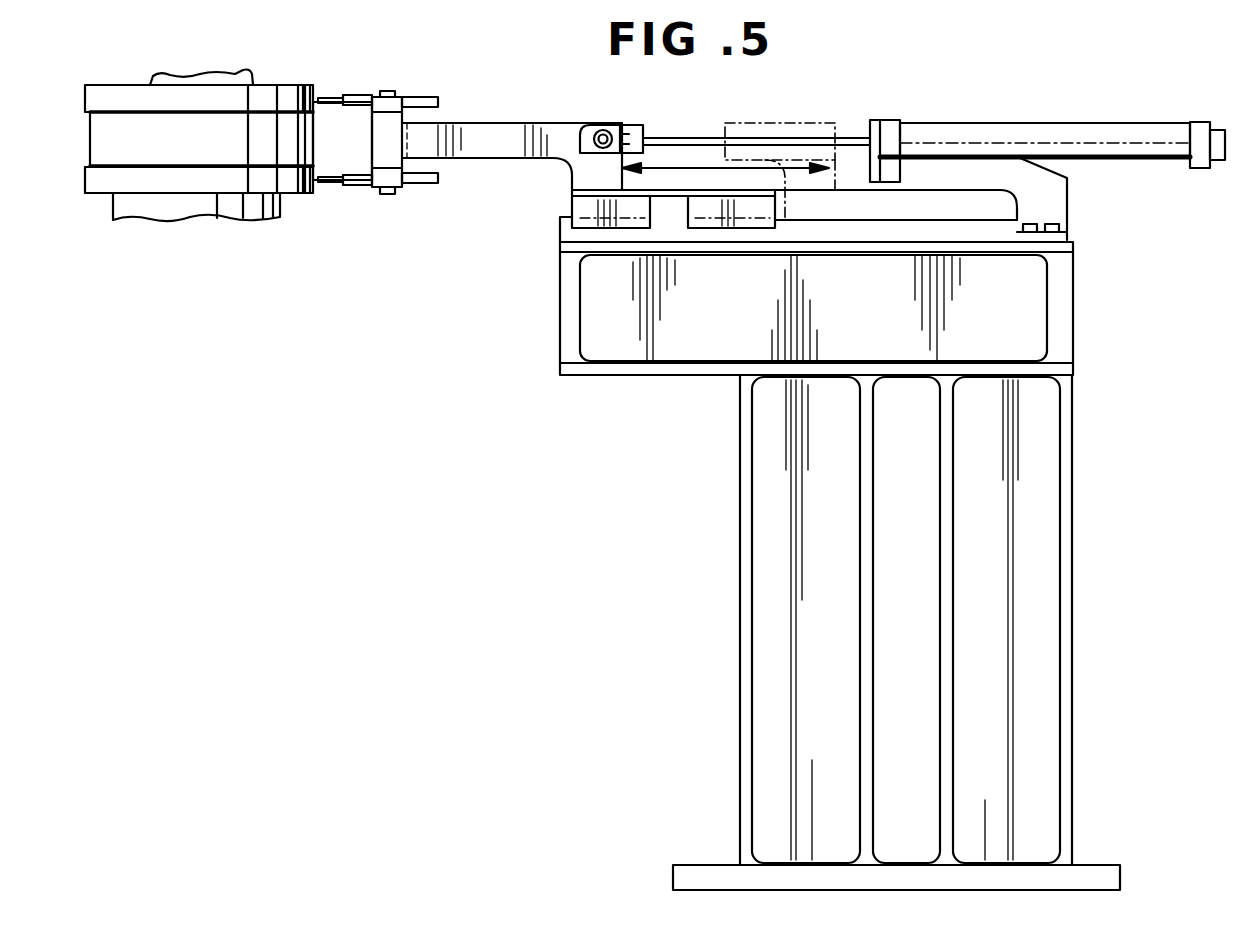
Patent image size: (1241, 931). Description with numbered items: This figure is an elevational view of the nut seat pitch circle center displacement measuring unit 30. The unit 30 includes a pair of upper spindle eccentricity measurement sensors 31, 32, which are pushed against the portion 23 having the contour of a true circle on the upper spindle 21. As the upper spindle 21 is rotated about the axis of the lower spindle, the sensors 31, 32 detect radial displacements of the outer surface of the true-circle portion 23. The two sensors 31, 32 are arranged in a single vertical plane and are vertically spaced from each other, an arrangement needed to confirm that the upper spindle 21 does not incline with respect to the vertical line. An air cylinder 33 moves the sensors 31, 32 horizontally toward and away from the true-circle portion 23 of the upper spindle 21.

The upper spindle 21 is at (153, 77).
The portion with the contour of a true circle 23 is at (323, 96).
The nut seat pitch circle center displacement measuring unit 30 is at (402, 92).
The upper spindle eccentricity measurement sensor 31 is at (333, 101).
The upper spindle eccentricity measurement sensor 32 is at (340, 187).
The air cylinder 33 is at (1096, 137).